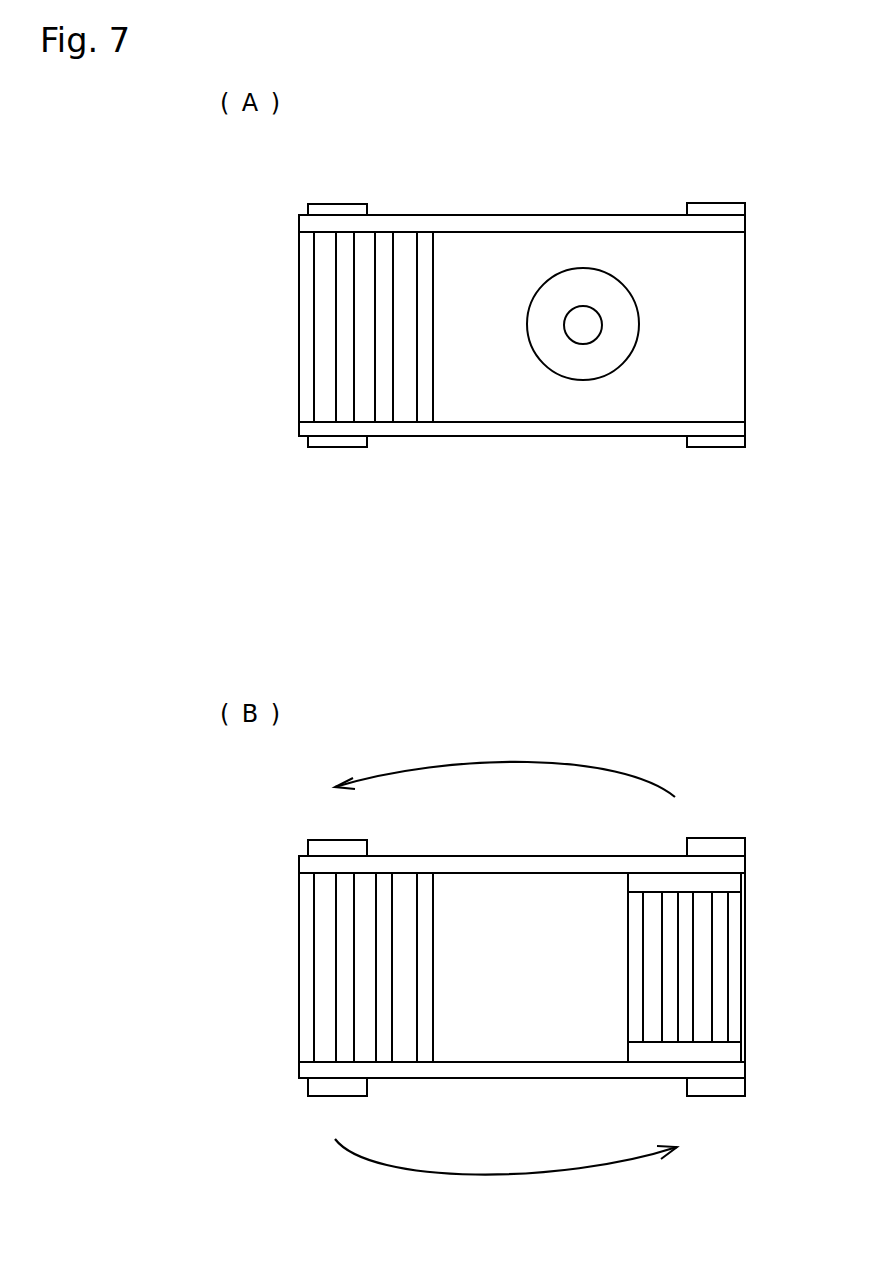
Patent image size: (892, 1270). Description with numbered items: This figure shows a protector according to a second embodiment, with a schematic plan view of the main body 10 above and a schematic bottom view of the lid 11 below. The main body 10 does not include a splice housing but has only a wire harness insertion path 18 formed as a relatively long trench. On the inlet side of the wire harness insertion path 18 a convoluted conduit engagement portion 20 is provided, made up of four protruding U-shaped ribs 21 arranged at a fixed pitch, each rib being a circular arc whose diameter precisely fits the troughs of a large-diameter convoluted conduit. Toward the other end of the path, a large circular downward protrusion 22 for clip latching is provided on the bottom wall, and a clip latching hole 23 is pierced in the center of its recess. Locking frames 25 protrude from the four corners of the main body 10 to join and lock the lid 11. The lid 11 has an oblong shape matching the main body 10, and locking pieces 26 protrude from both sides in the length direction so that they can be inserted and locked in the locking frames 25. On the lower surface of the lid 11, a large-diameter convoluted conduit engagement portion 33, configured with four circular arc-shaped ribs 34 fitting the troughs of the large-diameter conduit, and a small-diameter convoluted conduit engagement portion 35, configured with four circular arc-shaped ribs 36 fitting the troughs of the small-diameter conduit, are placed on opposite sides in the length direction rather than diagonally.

The main body 10 is at (518, 213).
The lid 11 is at (506, 856).
The wire harness insertion path 18 is at (708, 378).
The convoluted conduit engagement portion 20 is at (300, 314).
The ribs 21 is at (307, 410).
The downward protrusion 22 is at (607, 352).
The clip latching hole 23 is at (577, 323).
The locking frames 25 is at (711, 203).
The locking pieces 26 is at (718, 843).
The large-diameter convoluted conduit engagement portion 33 is at (310, 993).
The ribs 34 is at (345, 934).
The small-diameter convoluted conduit engagement portion 35 is at (707, 988).
The ribs 36 is at (704, 919).